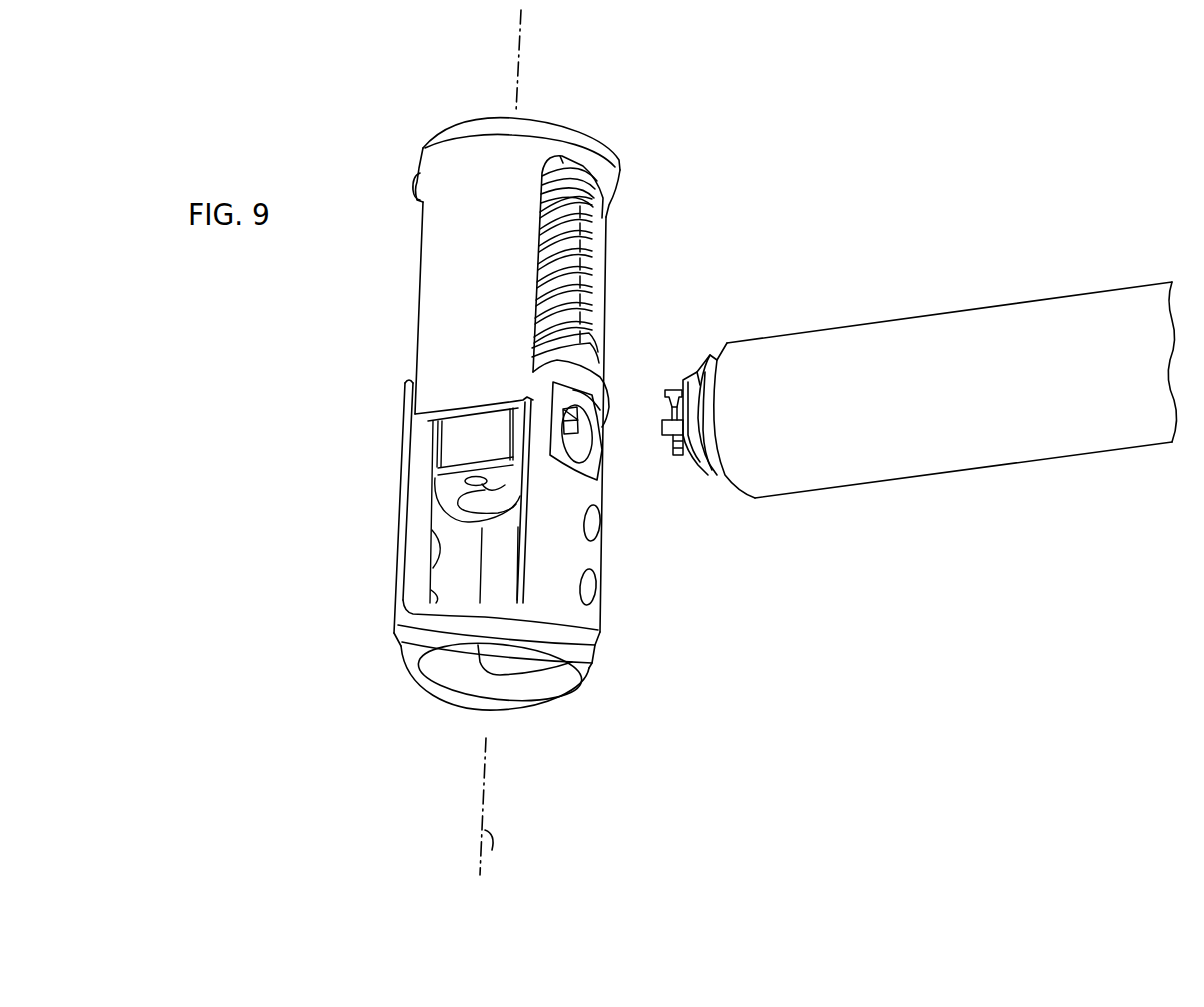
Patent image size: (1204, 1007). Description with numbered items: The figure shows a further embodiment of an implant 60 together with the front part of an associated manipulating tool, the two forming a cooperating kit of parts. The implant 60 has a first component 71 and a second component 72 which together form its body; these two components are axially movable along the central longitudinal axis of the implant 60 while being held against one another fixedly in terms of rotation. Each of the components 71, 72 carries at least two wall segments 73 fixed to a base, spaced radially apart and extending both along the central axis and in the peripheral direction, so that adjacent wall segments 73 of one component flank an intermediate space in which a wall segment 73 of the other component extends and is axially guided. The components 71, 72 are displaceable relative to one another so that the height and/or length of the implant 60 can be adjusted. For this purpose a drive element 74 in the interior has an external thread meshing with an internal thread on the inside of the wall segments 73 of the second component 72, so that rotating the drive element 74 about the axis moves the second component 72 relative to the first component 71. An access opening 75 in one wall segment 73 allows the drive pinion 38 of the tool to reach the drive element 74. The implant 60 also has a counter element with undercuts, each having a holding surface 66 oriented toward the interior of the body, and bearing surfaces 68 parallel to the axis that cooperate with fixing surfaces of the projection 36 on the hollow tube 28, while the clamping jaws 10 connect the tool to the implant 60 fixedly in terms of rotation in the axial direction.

The clamping jaws 10 is at (688, 376).
The hollow tube 28 is at (890, 478).
The projection 36 is at (709, 370).
The drive pinion 38 is at (670, 458).
The implant 60 is at (355, 712).
The holding surface 66 is at (600, 407).
The bearing surfaces 68 is at (605, 413).
The first component 71 is at (620, 696).
The second component 72 is at (643, 131).
The wall segments 73 is at (490, 260).
The drive element 74 is at (587, 338).
The access opening 75 is at (604, 456).